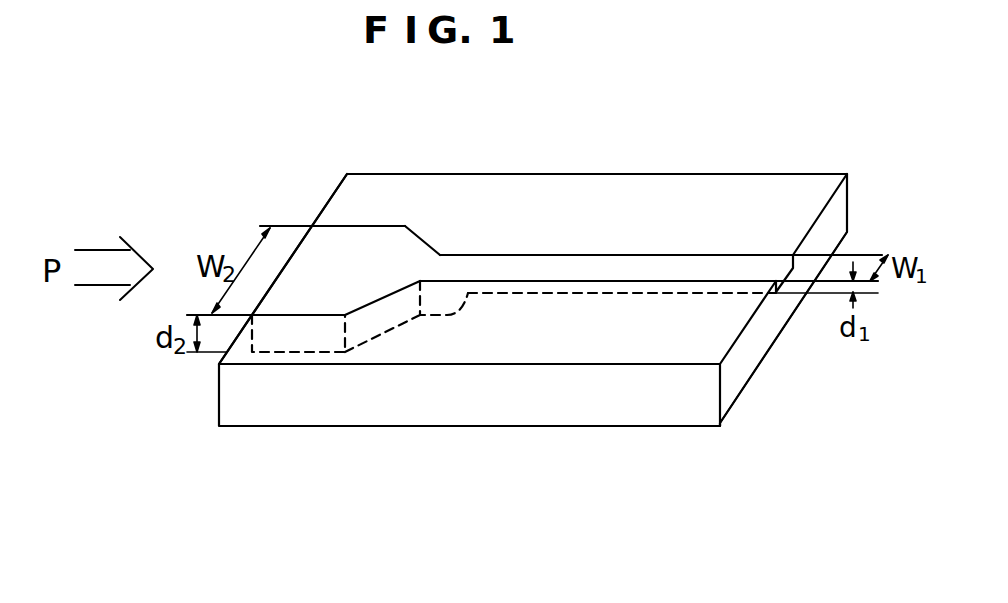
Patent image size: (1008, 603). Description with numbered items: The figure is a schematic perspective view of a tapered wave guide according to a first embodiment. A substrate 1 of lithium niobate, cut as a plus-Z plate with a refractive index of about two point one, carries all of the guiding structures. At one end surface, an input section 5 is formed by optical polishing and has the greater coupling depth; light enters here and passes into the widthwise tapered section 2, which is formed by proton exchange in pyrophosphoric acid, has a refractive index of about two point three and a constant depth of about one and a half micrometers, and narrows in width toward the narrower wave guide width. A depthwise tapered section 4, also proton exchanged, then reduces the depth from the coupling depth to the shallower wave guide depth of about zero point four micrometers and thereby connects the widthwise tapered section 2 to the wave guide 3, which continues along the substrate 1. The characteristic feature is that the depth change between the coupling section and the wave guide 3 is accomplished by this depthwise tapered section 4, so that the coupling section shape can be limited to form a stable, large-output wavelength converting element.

The substrate 1 is at (245, 407).
The widthwise tapered section 2 is at (395, 245).
The wave guide 3 is at (628, 262).
The depthwise tapered section 4 is at (455, 308).
The input section 5 is at (290, 255).